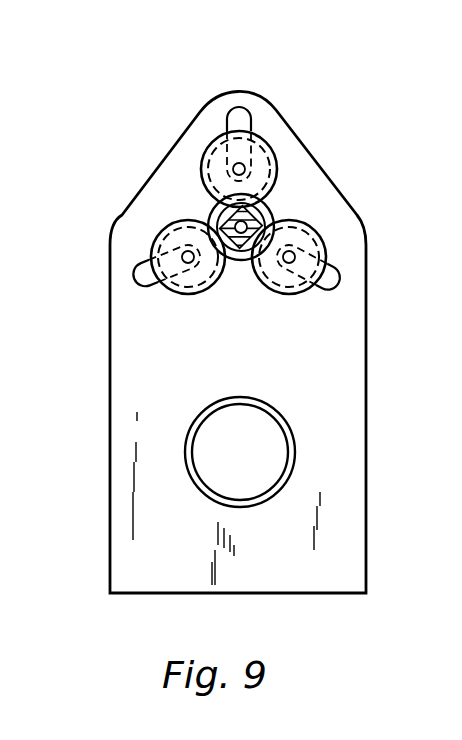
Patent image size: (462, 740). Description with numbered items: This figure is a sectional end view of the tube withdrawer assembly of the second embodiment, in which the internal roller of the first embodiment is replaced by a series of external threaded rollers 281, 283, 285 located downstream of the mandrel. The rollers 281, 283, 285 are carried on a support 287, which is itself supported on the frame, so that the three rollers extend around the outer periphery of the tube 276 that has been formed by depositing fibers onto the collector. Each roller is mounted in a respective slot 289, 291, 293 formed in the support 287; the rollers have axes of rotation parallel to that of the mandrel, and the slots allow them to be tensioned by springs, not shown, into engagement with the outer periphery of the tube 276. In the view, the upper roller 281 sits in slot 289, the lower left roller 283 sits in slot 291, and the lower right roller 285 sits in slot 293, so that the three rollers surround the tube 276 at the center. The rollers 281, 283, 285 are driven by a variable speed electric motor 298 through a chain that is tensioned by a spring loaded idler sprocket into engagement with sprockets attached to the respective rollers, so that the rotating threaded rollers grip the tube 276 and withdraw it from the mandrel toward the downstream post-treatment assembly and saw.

The tube 276 is at (272, 208).
The external threaded roller 281 is at (267, 145).
The external threaded roller 283 is at (182, 222).
The external threaded roller 285 is at (318, 231).
The support 287 is at (343, 518).
The slot 289 is at (240, 108).
The slot 291 is at (143, 288).
The slot 293 is at (336, 283).
The variable speed electric motor 298 is at (292, 428).